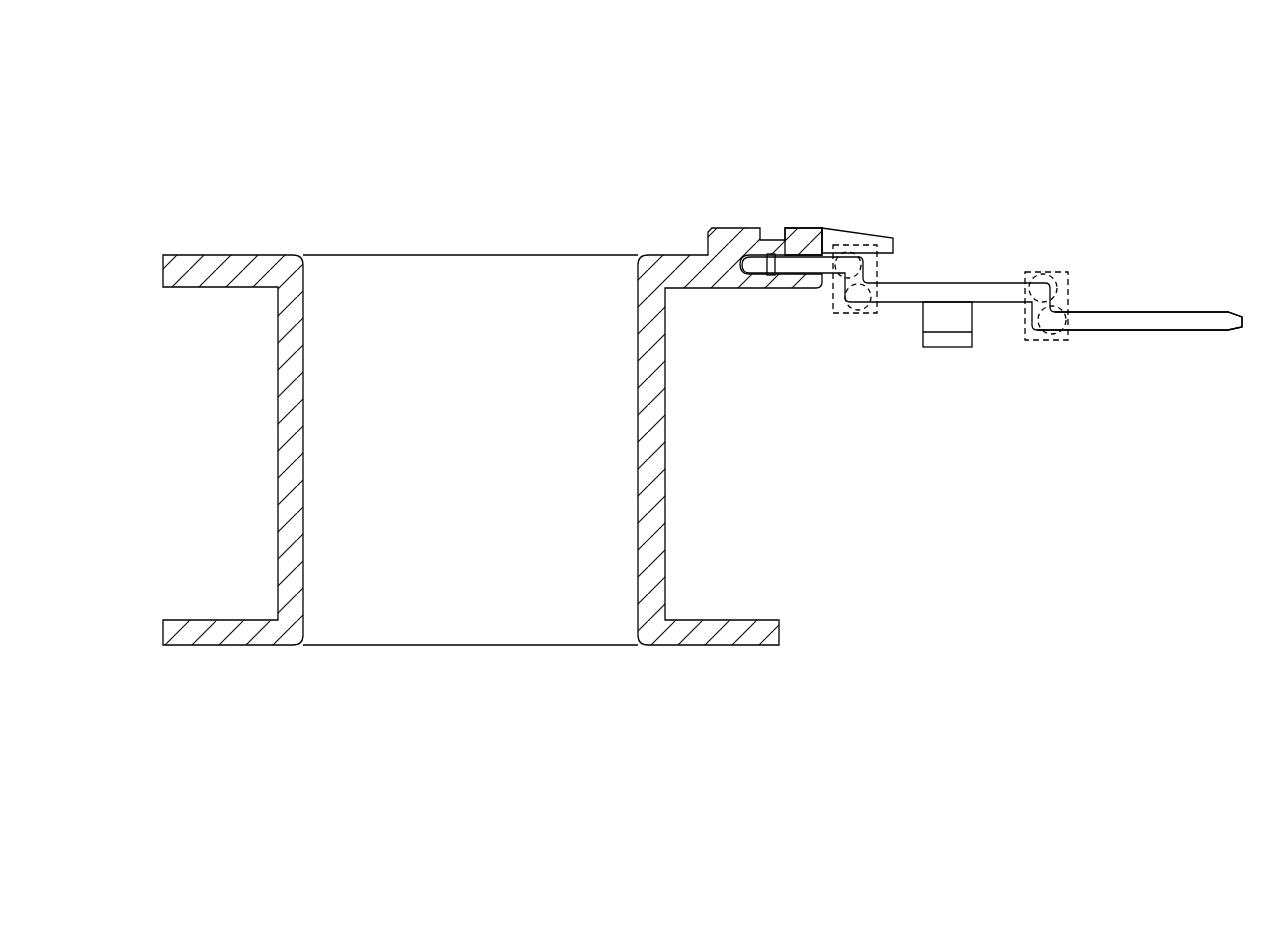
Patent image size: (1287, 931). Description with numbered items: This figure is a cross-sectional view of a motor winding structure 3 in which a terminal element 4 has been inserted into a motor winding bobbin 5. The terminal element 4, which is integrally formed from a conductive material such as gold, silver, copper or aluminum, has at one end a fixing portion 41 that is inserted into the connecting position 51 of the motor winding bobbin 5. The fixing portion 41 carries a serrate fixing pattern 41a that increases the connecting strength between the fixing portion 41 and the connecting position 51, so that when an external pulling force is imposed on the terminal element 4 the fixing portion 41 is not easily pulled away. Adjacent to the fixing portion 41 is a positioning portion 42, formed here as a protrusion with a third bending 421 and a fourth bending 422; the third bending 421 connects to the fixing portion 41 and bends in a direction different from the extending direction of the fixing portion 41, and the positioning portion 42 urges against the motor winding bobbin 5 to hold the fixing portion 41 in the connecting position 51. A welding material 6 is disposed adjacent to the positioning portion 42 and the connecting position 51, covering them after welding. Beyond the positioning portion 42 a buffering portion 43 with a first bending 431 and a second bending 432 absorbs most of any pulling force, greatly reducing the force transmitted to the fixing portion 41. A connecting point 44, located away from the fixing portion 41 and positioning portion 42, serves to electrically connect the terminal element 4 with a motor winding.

The motor winding structure 3 is at (260, 131).
The motor winding bobbin 5 is at (220, 255).
The connecting position 51 is at (802, 245).
The welding material 6 is at (843, 230).
The fixing portion 41 is at (747, 256).
The serrate fixing pattern 41a is at (774, 276).
The positioning portion 42 is at (880, 229).
The third bending 421 is at (872, 263).
The fourth bending 422 is at (862, 313).
The buffering portion 43 is at (1047, 270).
The first bending 431 is at (1056, 277).
The second bending 432 is at (1050, 337).
The connecting point 44 is at (948, 347).
The terminal element 4 is at (1173, 311).